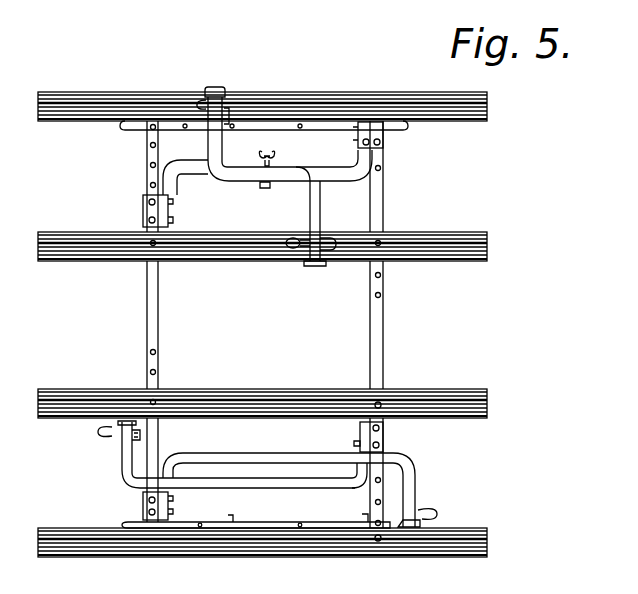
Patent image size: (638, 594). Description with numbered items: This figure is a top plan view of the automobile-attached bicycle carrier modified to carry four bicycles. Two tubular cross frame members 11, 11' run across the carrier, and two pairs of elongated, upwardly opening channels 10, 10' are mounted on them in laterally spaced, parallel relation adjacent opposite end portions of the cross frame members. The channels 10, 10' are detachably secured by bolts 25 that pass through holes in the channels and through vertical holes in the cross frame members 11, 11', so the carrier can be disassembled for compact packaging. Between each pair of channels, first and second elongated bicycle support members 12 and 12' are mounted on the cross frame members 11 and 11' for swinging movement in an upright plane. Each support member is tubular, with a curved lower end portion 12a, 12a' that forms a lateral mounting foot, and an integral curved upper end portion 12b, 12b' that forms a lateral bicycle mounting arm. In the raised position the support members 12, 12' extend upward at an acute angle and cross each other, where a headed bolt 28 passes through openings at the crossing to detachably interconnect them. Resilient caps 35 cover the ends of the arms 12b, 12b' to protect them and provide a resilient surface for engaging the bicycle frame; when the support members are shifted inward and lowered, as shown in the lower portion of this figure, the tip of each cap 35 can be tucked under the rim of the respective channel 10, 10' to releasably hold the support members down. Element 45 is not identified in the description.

The channel 10 is at (289, 401).
The channel 10' is at (298, 534).
The cross frame member 11 is at (401, 324).
The cross frame member 11' is at (178, 321).
The first elongated bicycle support member 12 is at (246, 496).
The second elongated bicycle support member 12' is at (288, 444).
The lower end portion 12a is at (327, 474).
The lower end portion 12a' is at (203, 451).
The upper end portion 12b is at (100, 455).
The upper end portion 12b' is at (439, 490).
The bolt 25 is at (380, 404).
The headed bolt 28 is at (263, 184).
The resilient cap 35 is at (314, 266).
The bottom mounting bar 45 is at (296, 522).